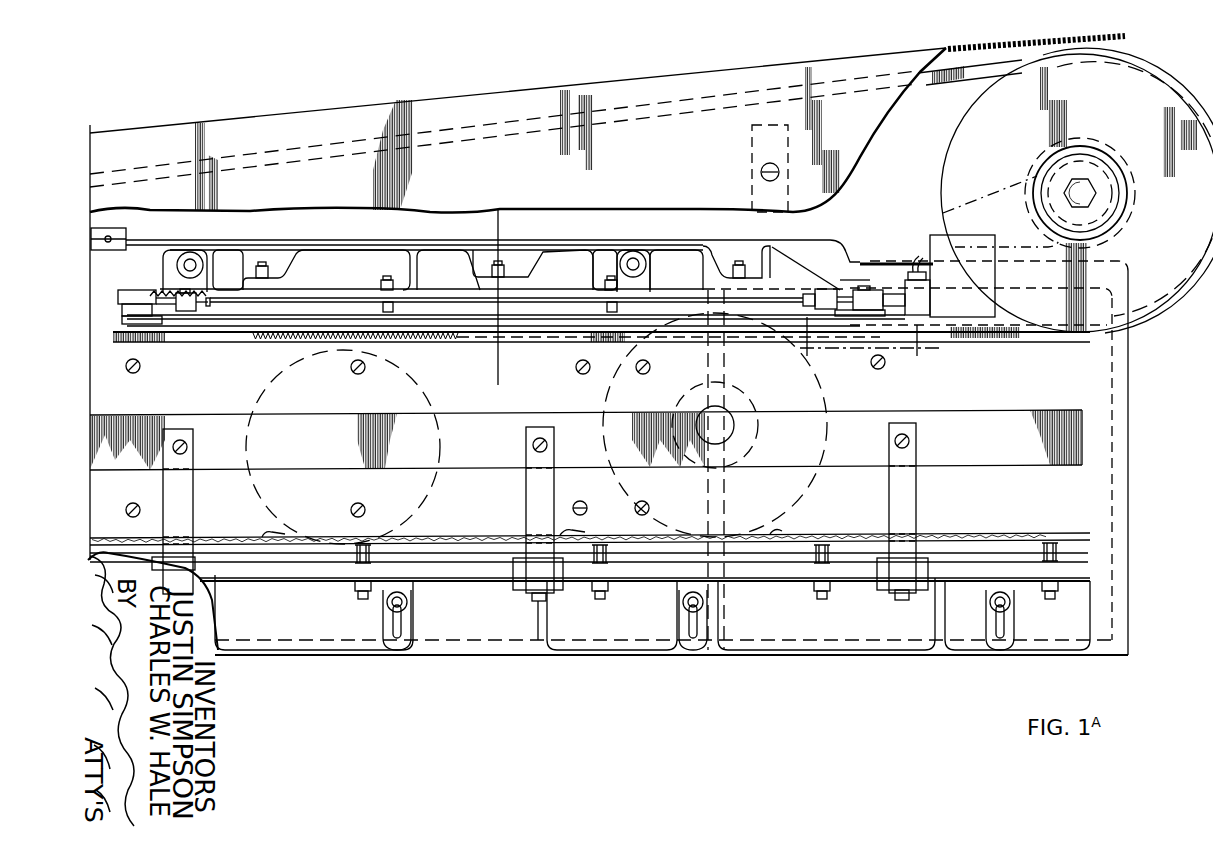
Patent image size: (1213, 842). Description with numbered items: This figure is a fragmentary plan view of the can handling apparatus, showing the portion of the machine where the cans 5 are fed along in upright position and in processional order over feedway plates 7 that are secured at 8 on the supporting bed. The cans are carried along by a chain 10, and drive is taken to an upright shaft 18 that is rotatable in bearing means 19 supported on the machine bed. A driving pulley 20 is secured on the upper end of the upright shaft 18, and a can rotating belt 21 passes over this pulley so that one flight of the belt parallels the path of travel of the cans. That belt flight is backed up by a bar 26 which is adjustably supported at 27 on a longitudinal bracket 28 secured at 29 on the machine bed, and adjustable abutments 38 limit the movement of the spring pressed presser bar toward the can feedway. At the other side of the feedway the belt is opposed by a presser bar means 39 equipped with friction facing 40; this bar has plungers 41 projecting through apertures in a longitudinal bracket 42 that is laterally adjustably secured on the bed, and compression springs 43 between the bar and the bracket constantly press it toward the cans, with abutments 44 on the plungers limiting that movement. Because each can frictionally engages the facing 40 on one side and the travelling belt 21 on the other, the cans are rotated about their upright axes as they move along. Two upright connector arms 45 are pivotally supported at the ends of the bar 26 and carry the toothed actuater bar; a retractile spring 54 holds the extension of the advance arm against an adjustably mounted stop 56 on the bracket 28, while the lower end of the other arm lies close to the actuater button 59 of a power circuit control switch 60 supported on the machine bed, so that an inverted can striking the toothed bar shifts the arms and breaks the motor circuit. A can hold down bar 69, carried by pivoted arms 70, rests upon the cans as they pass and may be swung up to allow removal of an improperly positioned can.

The cans 5 is at (403, 506).
The feedway plates 7 is at (1144, 480).
The securing means 8 is at (354, 370).
The chain 10 is at (483, 222).
The upright shaft 18 is at (1074, 188).
The bearing means 19 is at (1108, 194).
The driving pulley 20 is at (1143, 103).
The can rotating belt 21 is at (925, 72).
The bar 26 is at (632, 322).
The adjustable support 27 is at (388, 278).
The longitudinal bracket 28 is at (447, 290).
The securing means 29 is at (198, 258).
The adjustable abutments 38 is at (735, 266).
The presser bar means 39 is at (268, 547).
The friction facing 40 is at (525, 524).
The plungers 41 is at (355, 562).
The longitudinal bracket 42 is at (660, 571).
The compression springs 43 is at (600, 545).
The abutments 44 is at (360, 590).
The connector arms 45 is at (138, 295).
The retractile spring 54 is at (130, 291).
The stop 56 is at (153, 330).
The actuater button 59 is at (895, 296).
The power circuit control switch 60 is at (927, 297).
The can hold down bar 69 is at (219, 437).
The arms 70 is at (190, 511).